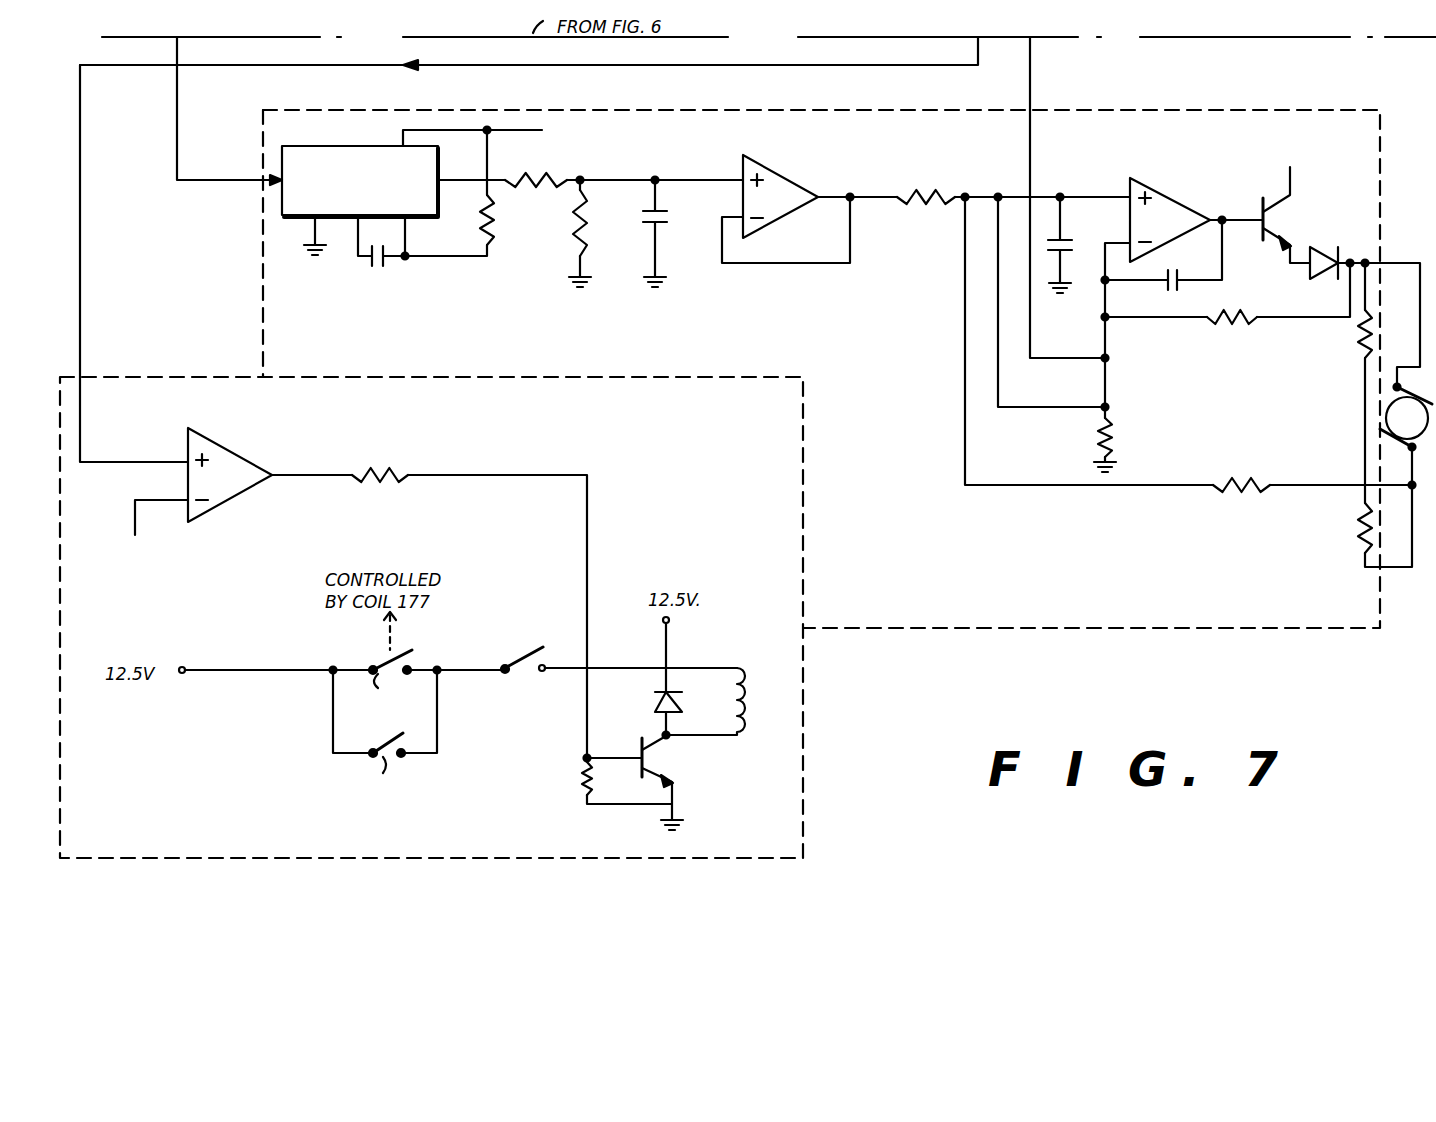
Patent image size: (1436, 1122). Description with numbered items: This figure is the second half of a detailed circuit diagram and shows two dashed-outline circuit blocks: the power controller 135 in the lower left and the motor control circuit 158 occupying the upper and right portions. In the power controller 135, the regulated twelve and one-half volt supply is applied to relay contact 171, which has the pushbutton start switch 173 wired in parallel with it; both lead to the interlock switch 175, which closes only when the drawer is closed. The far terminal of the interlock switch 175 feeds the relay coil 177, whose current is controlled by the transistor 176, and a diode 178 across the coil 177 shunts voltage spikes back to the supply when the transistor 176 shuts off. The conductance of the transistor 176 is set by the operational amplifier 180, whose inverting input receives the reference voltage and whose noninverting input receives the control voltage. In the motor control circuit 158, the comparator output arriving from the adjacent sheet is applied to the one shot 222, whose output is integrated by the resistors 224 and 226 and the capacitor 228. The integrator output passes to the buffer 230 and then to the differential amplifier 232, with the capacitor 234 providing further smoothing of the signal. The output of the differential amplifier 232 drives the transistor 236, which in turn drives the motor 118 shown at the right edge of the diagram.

The motor 118 is at (1386, 420).
The power controller 135 is at (628, 377).
The motor control circuit 158 is at (1162, 628).
The relay contact 171 is at (383, 688).
The pushbutton start switch 173 is at (385, 740).
The interlock switch 175 is at (543, 653).
The transistor 176 is at (665, 755).
The coil 177 is at (752, 690).
The diode 178 is at (650, 709).
The operational amplifier 180 is at (246, 462).
The one shot 222 is at (300, 208).
The resistor 224 is at (535, 172).
The resistor 226 is at (573, 226).
The capacitor 228 is at (670, 222).
The buffer 230 is at (800, 189).
The differential amplifier 232 is at (1178, 201).
The capacitor 234 is at (1094, 232).
The transistor 236 is at (1270, 219).